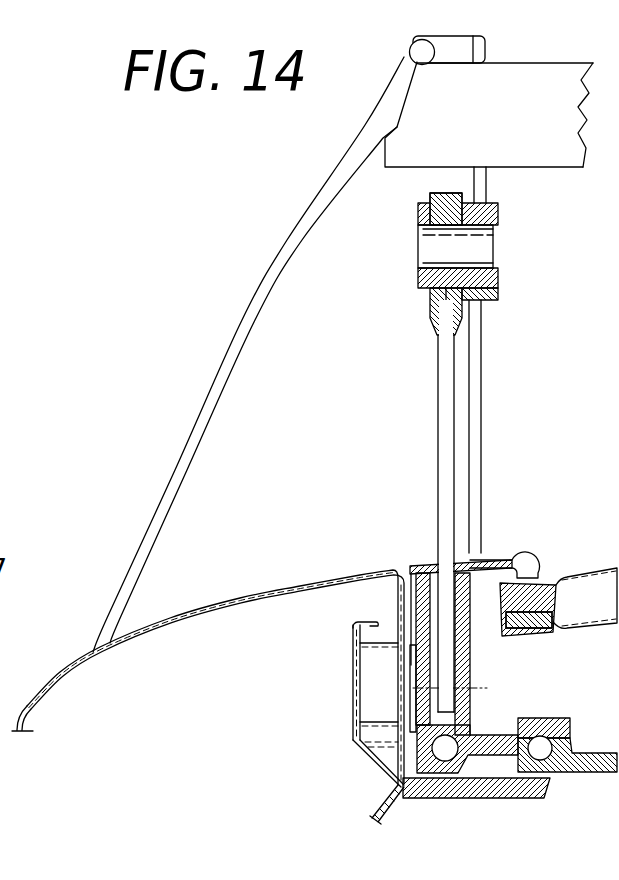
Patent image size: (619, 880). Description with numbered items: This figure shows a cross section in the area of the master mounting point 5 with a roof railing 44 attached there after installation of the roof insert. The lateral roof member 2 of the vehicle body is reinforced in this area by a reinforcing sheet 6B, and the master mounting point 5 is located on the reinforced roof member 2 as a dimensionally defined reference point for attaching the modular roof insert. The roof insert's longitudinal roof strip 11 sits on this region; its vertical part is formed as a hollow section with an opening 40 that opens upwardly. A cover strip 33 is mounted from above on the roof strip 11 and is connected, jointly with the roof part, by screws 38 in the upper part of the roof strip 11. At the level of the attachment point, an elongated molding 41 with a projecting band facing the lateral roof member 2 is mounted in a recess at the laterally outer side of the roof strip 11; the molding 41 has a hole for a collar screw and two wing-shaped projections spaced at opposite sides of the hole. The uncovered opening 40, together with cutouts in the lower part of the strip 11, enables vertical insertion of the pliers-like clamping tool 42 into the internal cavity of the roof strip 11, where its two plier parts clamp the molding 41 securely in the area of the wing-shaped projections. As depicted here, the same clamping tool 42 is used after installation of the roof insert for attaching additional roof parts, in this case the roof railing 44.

The lateral roof member 2 is at (220, 622).
The master mounting point 5 is at (475, 690).
The reinforcing sheet 6B is at (353, 665).
The longitudinal roof strip 11 is at (462, 653).
The cover strip 33 is at (513, 557).
The screw 38 is at (0, 602).
The opening 40 is at (433, 561).
The elongated molding 41 is at (413, 723).
The clamping tool 42 is at (445, 383).
The roof railing 44 is at (327, 265).